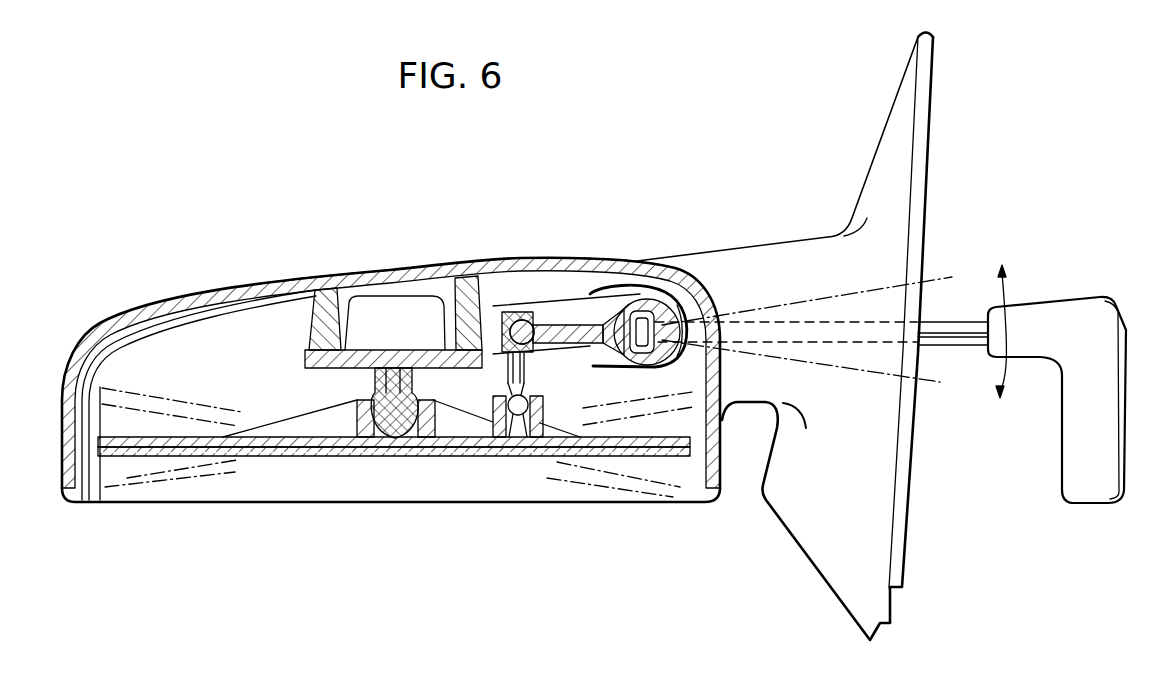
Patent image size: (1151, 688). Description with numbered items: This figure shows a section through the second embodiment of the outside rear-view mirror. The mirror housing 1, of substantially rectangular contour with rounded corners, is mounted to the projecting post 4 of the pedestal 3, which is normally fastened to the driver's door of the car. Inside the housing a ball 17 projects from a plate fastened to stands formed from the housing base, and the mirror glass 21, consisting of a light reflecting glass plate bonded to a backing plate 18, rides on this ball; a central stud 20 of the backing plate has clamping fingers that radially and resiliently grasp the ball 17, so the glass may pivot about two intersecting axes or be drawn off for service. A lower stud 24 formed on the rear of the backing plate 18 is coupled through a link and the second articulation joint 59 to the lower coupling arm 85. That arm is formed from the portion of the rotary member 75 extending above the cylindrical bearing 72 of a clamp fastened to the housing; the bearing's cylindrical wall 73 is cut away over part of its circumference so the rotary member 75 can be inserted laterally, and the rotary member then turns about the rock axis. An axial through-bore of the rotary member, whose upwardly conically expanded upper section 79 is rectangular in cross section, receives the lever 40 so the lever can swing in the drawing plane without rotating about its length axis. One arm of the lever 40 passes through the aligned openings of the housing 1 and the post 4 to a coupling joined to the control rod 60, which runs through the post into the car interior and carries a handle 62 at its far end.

The mirror housing 1 is at (296, 270).
The pedestal 3 is at (792, 561).
The post 4 is at (768, 267).
The ball 17 is at (377, 418).
The backing plate 18 is at (303, 450).
The stud 20 is at (450, 418).
The mirror glass 21 is at (208, 458).
The stud 24 is at (483, 424).
The lever 40 is at (702, 373).
The second articulation joint 59 is at (517, 302).
The control rod 60 is at (957, 328).
The handle 62 is at (1060, 312).
The cylindrical bearing 72 is at (592, 306).
The cylindrical wall 73 is at (590, 363).
The rotary member 75 is at (662, 304).
The upper section 79 is at (650, 314).
The lower coupling arm 85 is at (557, 333).